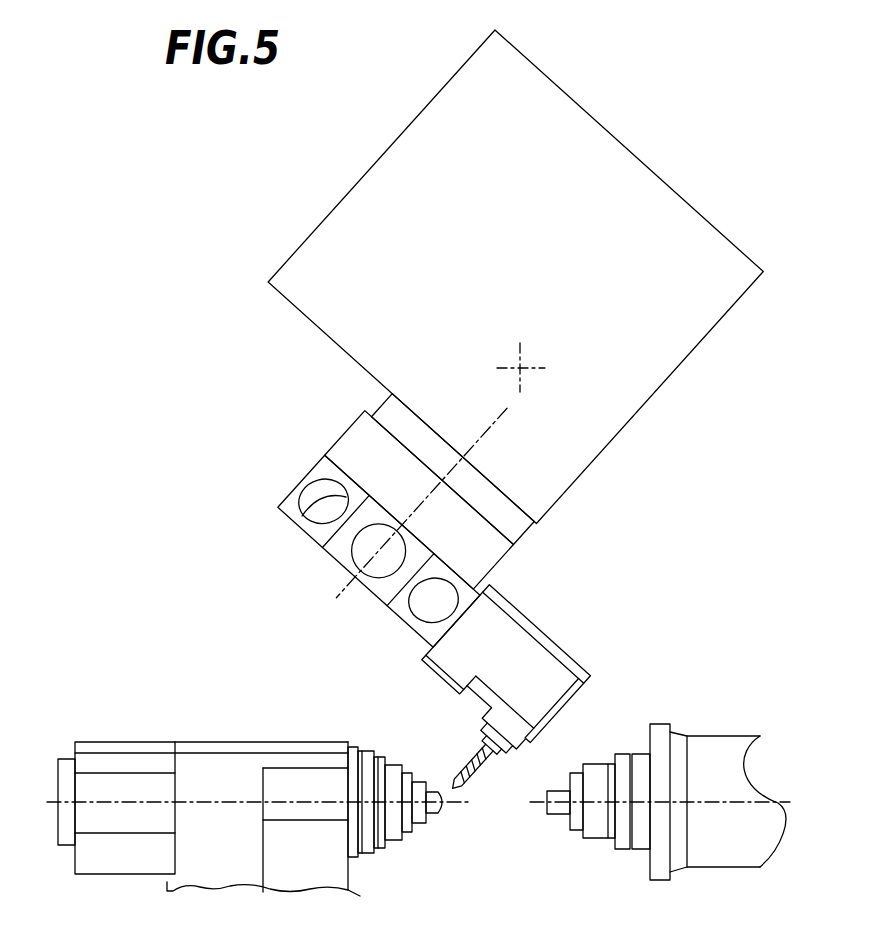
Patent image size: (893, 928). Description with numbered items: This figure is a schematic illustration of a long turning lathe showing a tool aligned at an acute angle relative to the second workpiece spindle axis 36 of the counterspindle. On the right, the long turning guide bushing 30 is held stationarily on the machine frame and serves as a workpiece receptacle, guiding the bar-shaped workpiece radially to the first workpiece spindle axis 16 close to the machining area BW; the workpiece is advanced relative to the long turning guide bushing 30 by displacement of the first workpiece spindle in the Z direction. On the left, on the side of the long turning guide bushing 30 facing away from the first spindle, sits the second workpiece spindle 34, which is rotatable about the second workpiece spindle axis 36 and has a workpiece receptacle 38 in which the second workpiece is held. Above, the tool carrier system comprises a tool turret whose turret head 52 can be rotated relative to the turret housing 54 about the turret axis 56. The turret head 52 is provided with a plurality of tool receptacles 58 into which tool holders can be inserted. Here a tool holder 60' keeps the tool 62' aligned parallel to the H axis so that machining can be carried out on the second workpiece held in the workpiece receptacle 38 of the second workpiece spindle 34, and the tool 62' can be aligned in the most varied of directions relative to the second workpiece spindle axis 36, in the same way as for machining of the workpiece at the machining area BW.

The first workpiece spindle axis 16 is at (723, 803).
The long turning guide bushing 30 is at (643, 832).
The machining area BW is at (558, 808).
The second workpiece spindle 34 is at (393, 827).
The second workpiece spindle axis 36 is at (210, 803).
The workpiece receptacle 38 is at (417, 823).
The turret head 52 is at (343, 547).
The turret housing 54 is at (626, 383).
The turret axis 56 is at (420, 503).
The tool receptacle 58 is at (302, 522).
The tool holder 60' is at (504, 675).
The tool 62' is at (449, 757).